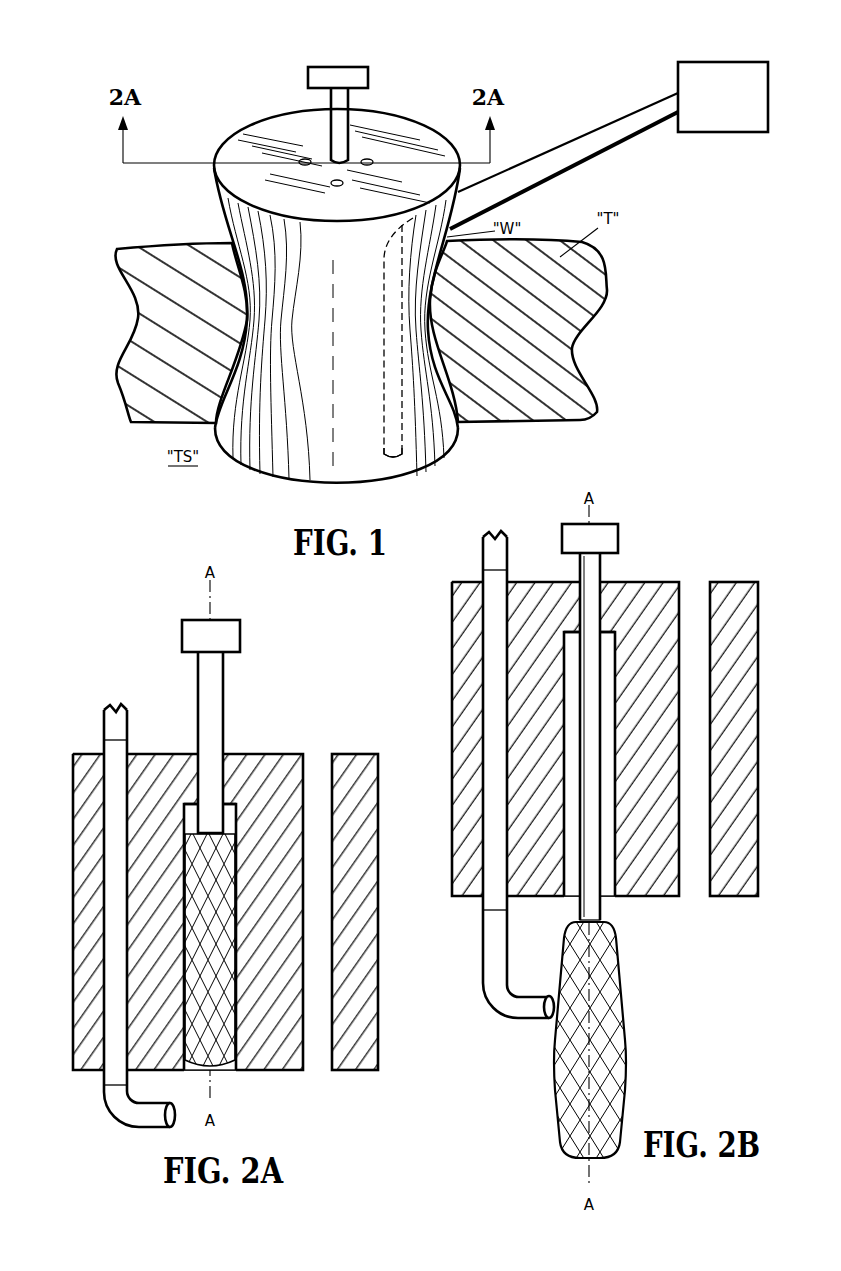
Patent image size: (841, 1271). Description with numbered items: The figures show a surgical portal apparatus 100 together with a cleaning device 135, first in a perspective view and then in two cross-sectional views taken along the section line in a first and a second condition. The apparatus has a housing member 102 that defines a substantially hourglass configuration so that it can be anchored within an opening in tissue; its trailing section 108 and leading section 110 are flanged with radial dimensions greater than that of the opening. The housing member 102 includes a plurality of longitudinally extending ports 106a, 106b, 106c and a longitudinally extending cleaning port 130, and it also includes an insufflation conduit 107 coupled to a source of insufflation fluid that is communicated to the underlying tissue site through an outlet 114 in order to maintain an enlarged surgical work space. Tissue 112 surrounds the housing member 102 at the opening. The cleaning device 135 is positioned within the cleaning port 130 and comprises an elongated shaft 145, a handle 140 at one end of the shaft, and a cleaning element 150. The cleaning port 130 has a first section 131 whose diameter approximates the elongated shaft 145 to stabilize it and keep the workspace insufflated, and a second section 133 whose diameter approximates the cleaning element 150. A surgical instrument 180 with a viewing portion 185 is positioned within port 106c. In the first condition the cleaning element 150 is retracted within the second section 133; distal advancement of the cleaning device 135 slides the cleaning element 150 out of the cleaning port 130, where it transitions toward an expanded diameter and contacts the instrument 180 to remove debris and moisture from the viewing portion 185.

In FIG. 1, the surgical portal apparatus 100 is at (215, 68).
In FIG. 1, the housing member 102 is at (237, 153).
In FIG. 1, the port 106a is at (370, 160).
In FIG. 2A, the port 106a is at (320, 852).
In FIG. 2B, the port 106a is at (711, 580).
In FIG. 1, the port 106b is at (343, 183).
In FIG. 1, the port 106c is at (305, 158).
In FIG. 2A, the port 106c is at (78, 813).
In FIG. 2B, the port 106c is at (453, 660).
In FIG. 1, the insufflation conduit 107 is at (567, 140).
In FIG. 1, the trailing section 108 is at (247, 210).
In FIG. 1, the leading section 110 is at (437, 440).
In FIG. 1, the tissue 112 is at (252, 266).
In FIG. 1, the outlet 114 is at (392, 455).
In FIG. 1, the cleaning port 130 is at (347, 160).
In FIG. 2A, the cleaning port 130 is at (260, 878).
In FIG. 2B, the cleaning port 130 is at (599, 721).
In FIG. 2A, the first section 131 is at (298, 754).
In FIG. 2B, the first section 131 is at (577, 612).
In FIG. 2A, the second section 133 is at (303, 842).
In FIG. 2B, the second section 133 is at (563, 757).
In FIG. 1, the cleaning device 135 is at (339, 56).
In FIG. 2A, the cleaning device 135 is at (238, 702).
In FIG. 2B, the cleaning device 135 is at (675, 697).
In FIG. 2A, the handle 140 is at (232, 637).
In FIG. 2B, the handle 140 is at (608, 535).
In FIG. 2A, the elongated shaft 145 is at (223, 700).
In FIG. 2B, the elongated shaft 145 is at (592, 760).
In FIG. 2A, the cleaning element 150 is at (207, 967).
In FIG. 2B, the cleaning element 150 is at (608, 963).
In FIG. 2A, the surgical instrument 180 is at (104, 730).
In FIG. 2B, the surgical instrument 180 is at (483, 556).
In FIG. 2A, the viewing portion 185 is at (175, 1106).
In FIG. 2B, the viewing portion 185 is at (545, 1022).